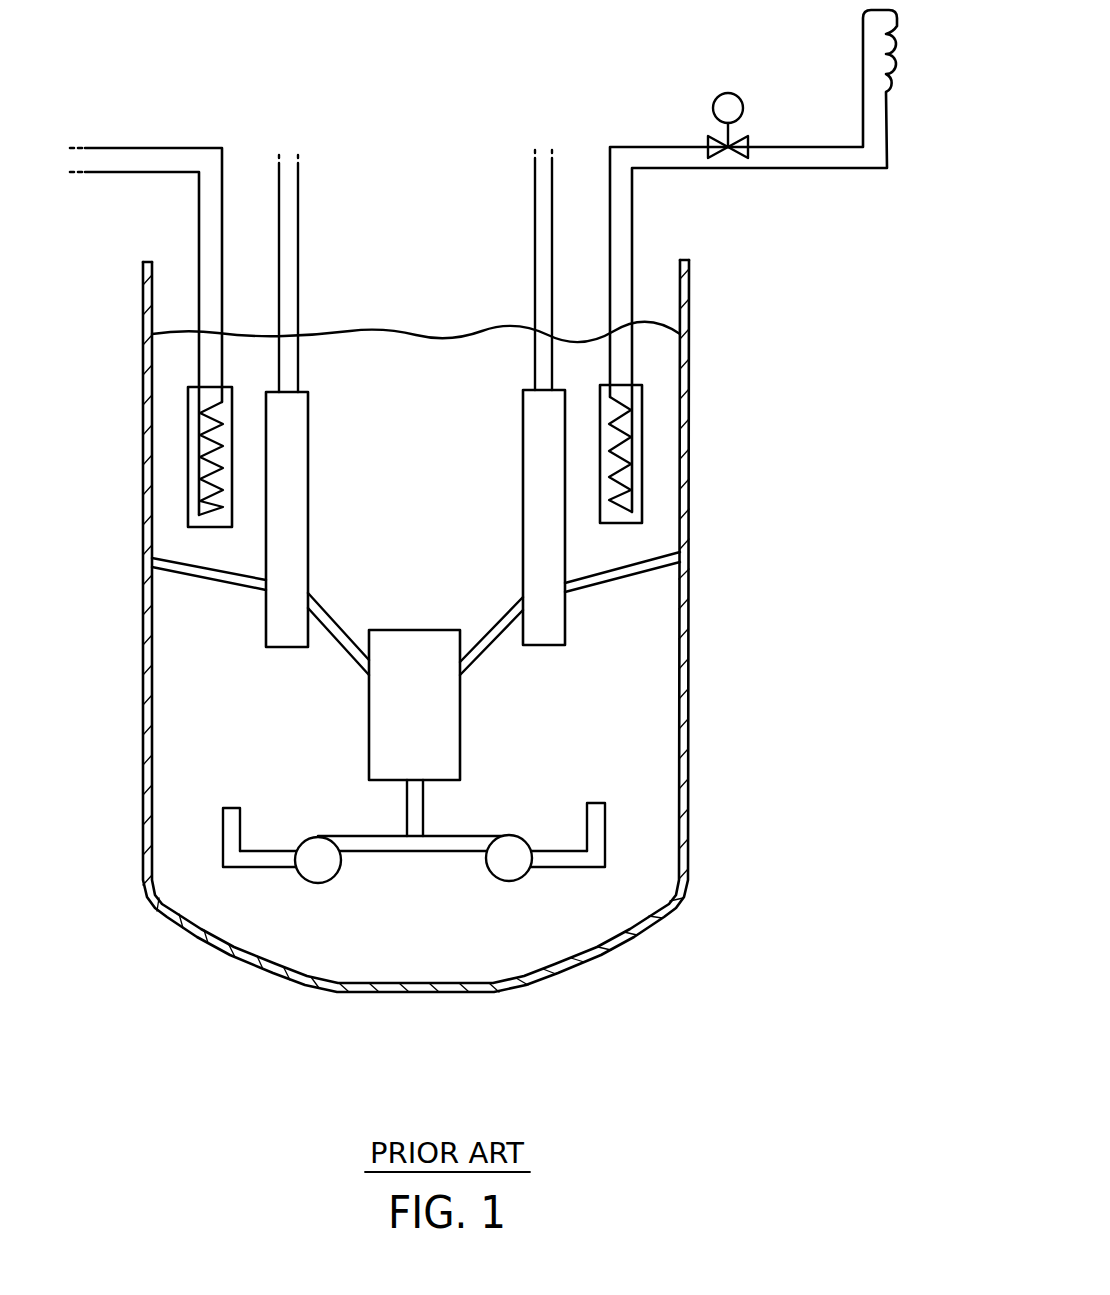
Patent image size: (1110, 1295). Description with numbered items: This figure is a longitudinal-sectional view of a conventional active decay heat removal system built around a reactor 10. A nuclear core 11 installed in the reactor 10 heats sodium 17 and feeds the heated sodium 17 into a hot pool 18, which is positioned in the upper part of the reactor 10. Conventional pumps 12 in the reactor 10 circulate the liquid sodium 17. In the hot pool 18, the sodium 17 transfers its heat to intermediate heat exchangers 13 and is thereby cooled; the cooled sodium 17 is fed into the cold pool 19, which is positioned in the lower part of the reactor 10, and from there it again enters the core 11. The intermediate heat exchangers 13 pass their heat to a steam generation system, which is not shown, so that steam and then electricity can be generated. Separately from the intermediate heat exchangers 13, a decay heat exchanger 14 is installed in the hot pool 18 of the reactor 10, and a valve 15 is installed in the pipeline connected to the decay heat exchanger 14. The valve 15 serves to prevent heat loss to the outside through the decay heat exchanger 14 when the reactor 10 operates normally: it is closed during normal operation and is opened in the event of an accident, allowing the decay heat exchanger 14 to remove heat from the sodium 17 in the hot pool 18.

The reactor 10 is at (294, 42).
The nuclear core 11 is at (443, 730).
The pump 12 is at (509, 870).
The intermediate heat exchanger 13 is at (565, 627).
The decay heat exchanger 14 is at (642, 427).
The valve 15 is at (728, 150).
The sodium 17 is at (385, 360).
The hot pool 18 is at (178, 502).
The cold pool 19 is at (190, 714).